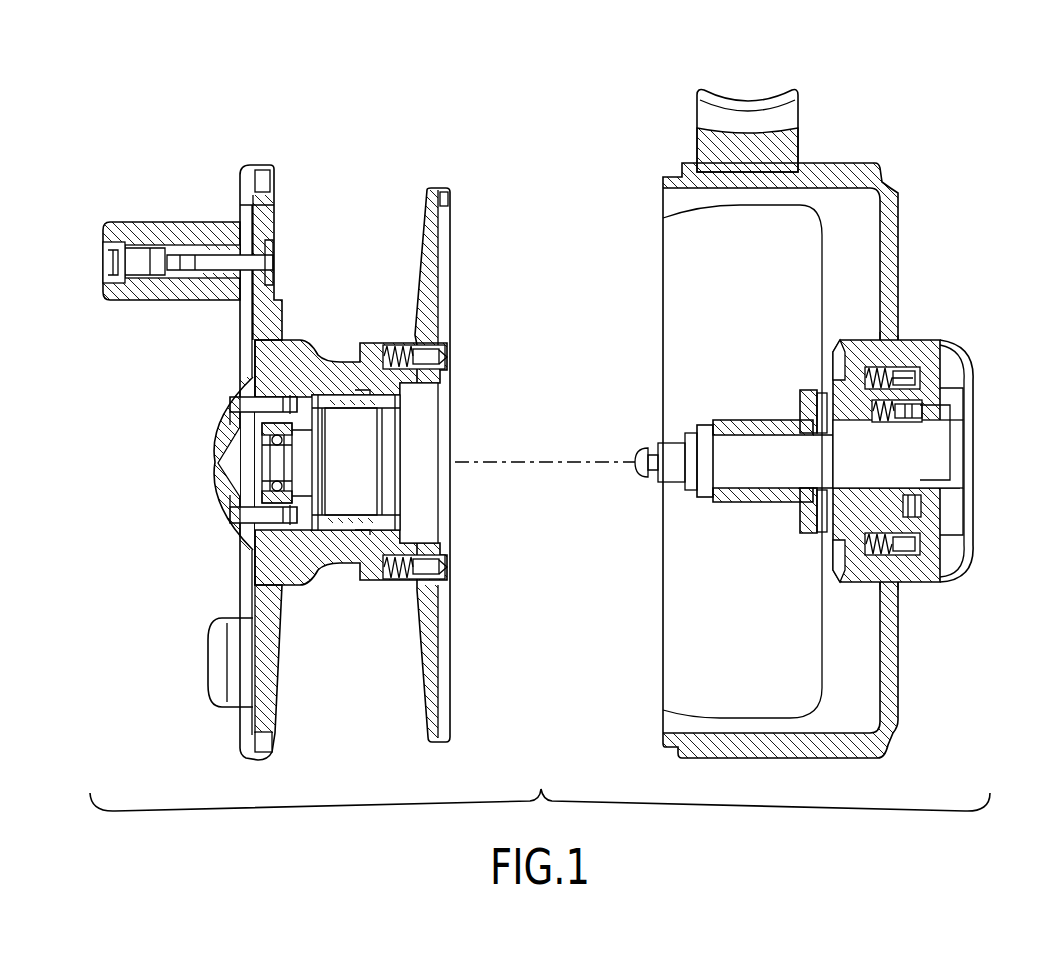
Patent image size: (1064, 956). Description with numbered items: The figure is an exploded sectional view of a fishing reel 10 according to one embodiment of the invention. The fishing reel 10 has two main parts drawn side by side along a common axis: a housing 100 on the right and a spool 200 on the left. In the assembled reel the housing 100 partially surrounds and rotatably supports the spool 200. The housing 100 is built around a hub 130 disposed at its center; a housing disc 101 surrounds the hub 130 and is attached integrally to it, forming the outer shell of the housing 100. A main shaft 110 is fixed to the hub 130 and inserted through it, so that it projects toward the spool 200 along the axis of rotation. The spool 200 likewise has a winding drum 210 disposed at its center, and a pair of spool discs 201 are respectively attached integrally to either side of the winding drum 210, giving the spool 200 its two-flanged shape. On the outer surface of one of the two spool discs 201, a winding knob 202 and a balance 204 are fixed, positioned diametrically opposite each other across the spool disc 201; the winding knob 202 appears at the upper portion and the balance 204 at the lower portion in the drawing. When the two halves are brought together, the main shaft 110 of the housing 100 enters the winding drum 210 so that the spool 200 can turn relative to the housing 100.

The fishing reel 10 is at (604, 77).
The housing 100 is at (960, 180).
The housing disc 101 is at (886, 186).
The main shaft 110 is at (665, 510).
The hub 130 is at (840, 530).
The spool 200 is at (475, 158).
The spool disc 201 is at (246, 322).
The winding knob 202 is at (126, 236).
The balance 204 is at (216, 668).
The winding drum 210 is at (262, 372).